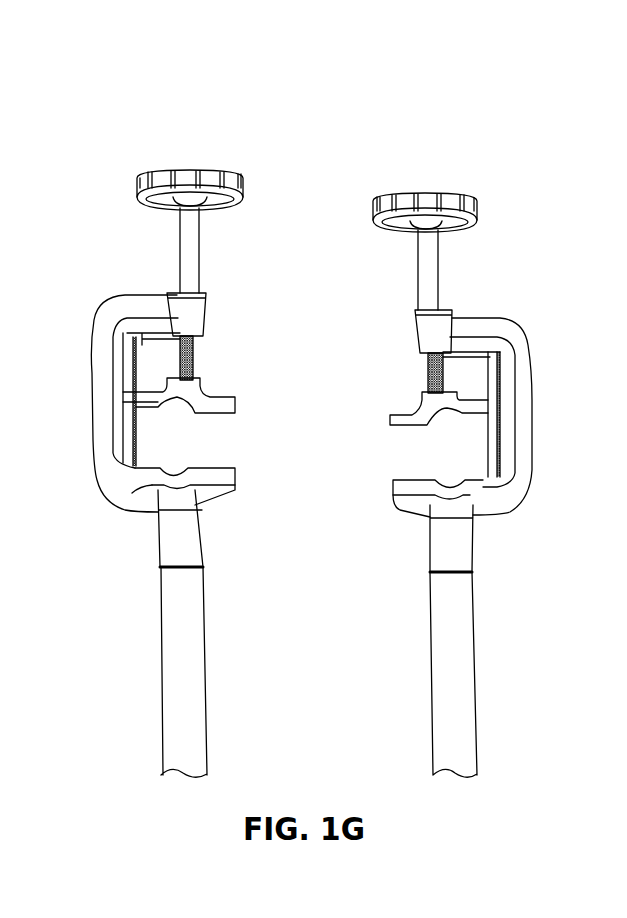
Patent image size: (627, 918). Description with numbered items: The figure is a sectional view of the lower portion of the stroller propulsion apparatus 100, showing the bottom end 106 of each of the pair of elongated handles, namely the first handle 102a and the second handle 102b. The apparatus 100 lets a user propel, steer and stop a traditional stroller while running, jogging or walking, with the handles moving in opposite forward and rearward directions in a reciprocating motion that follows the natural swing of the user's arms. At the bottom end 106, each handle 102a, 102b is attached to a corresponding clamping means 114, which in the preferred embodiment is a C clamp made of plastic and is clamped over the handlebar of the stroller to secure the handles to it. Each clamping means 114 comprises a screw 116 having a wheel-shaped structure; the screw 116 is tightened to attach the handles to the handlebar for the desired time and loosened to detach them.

The stroller propulsion apparatus 100 is at (108, 93).
The first handle 102a is at (462, 740).
The second handle 102b is at (190, 732).
The bottom end 106 is at (448, 570).
The clamping means 114 is at (440, 337).
The screw 116 is at (407, 193).